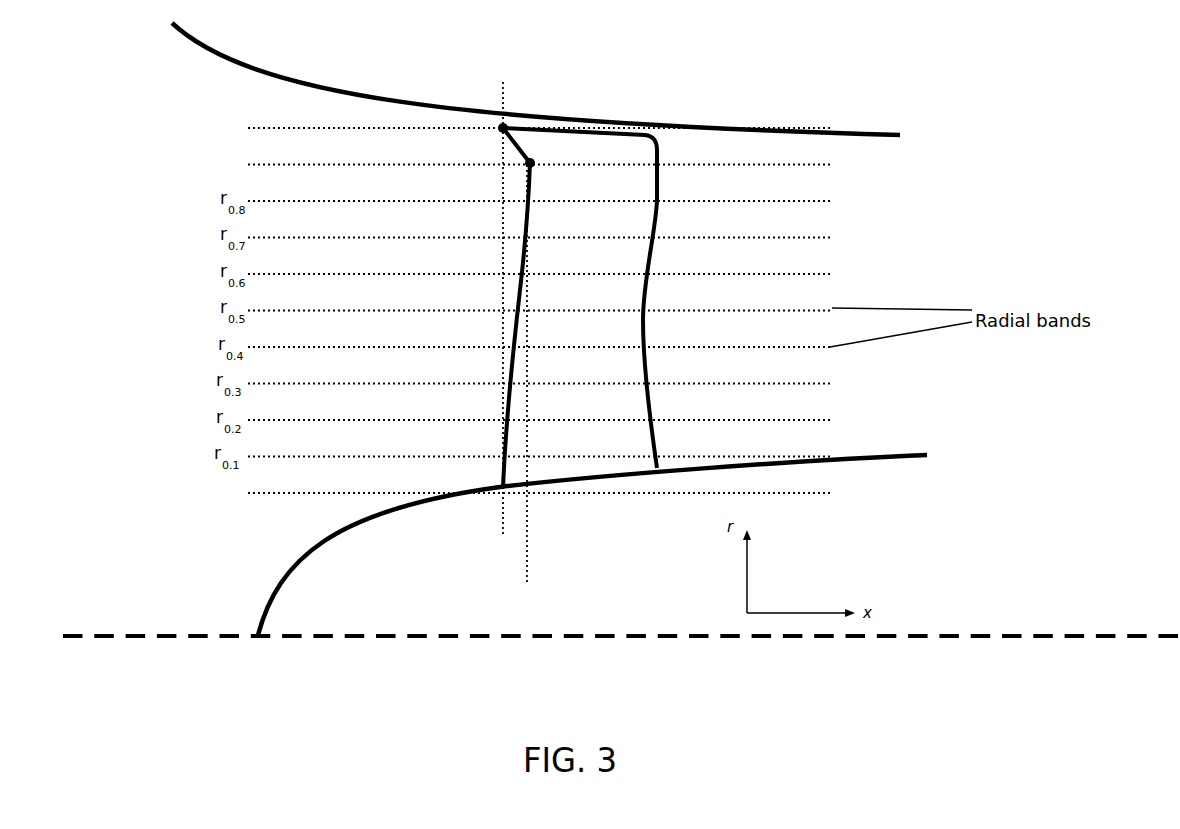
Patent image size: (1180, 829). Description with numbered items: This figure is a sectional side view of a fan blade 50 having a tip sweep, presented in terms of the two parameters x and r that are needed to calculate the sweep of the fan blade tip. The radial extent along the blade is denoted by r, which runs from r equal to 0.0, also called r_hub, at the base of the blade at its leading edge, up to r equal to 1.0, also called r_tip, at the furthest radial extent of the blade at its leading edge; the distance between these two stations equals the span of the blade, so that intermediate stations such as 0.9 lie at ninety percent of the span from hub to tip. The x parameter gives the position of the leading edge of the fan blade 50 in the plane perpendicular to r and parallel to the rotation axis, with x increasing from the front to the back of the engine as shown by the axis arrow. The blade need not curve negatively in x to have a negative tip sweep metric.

The fan blade 50 is at (658, 293).
The tip radial position 1.0 is at (493, 297).
The 0.9 span radial/axial station lines 0.9 is at (525, 385).
The hub radial position 0.0 is at (486, 519).